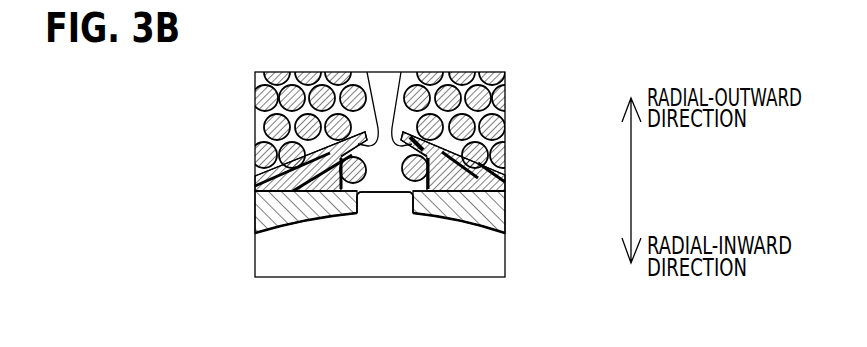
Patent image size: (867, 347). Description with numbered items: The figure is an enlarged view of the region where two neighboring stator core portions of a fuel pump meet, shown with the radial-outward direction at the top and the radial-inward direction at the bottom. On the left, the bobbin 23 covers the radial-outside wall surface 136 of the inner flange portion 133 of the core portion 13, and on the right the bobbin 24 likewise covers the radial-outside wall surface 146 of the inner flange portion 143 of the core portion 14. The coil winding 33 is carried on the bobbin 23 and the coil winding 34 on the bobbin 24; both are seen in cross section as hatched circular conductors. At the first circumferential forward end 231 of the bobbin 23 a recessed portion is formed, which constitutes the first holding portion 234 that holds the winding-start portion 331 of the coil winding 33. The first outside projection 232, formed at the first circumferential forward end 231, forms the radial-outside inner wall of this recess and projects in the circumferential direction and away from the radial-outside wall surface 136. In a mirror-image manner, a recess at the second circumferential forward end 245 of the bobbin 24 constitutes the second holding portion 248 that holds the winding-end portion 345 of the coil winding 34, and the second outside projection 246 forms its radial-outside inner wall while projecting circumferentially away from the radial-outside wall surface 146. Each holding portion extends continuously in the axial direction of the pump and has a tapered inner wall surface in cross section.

The core portion 13 is at (245, 216).
The core portion 14 is at (515, 214).
The bobbin 23 is at (245, 184).
The bobbin 24 is at (515, 182).
The coil winding 33 is at (340, 95).
The coil winding 34 is at (465, 90).
The inner flange portion 133 is at (318, 205).
The radial-outside wall surface 136 is at (272, 200).
The inner flange portion 143 is at (443, 205).
The radial-outside wall surface 146 is at (499, 215).
The first circumferential forward end 231 is at (298, 192).
The first outside projection 232 is at (343, 139).
The first holding portion 234 is at (366, 72).
The second circumferential forward end 245 is at (472, 195).
The second outside projection 246 is at (468, 145).
The second holding portion 248 is at (401, 72).
The winding-start portion 331 is at (350, 198).
The winding-end portion 345 is at (412, 198).